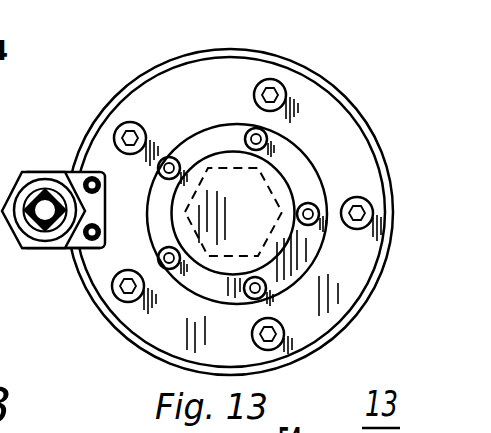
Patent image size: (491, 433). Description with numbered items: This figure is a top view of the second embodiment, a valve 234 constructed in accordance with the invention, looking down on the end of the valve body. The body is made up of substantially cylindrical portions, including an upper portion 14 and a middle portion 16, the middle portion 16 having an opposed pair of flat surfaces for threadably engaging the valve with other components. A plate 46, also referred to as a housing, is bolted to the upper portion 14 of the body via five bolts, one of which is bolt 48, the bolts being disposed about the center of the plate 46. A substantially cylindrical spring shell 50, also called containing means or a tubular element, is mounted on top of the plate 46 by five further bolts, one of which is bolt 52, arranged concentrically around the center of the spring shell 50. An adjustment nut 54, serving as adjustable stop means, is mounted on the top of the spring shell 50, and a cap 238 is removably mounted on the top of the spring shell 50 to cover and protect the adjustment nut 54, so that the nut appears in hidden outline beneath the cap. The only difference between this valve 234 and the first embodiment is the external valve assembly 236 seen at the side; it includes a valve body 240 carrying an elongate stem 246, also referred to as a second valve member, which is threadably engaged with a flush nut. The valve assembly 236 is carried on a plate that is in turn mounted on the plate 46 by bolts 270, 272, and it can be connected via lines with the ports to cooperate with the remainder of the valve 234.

The upper portion 14 is at (353, 321).
The middle portion 16 is at (320, 346).
The plate 46 is at (230, 206).
The bolt 48 is at (377, 214).
The spring shell 50 is at (230, 133).
The bolt 52 is at (320, 210).
The adjustment nut 54 is at (245, 227).
The valve 234 is at (72, 184).
The external valve assembly 236 is at (53, 210).
The cap 238 is at (288, 188).
The valve body 240 is at (63, 253).
The elongate stem 246 is at (4, 256).
The bolt 270 is at (82, 176).
The bolt 272 is at (97, 259).